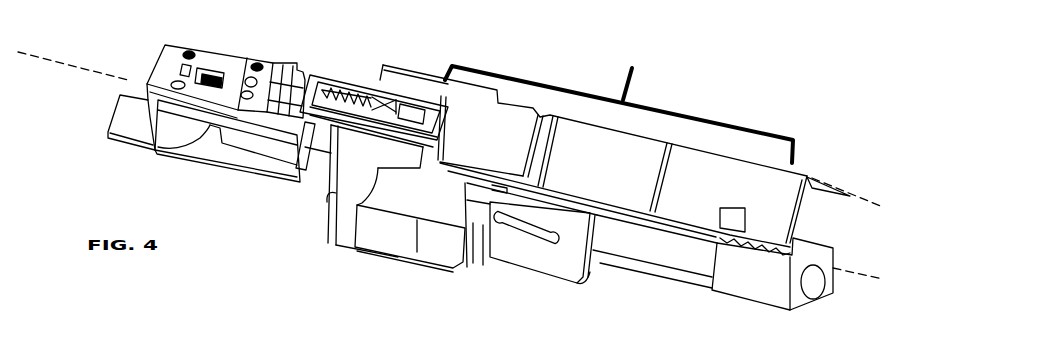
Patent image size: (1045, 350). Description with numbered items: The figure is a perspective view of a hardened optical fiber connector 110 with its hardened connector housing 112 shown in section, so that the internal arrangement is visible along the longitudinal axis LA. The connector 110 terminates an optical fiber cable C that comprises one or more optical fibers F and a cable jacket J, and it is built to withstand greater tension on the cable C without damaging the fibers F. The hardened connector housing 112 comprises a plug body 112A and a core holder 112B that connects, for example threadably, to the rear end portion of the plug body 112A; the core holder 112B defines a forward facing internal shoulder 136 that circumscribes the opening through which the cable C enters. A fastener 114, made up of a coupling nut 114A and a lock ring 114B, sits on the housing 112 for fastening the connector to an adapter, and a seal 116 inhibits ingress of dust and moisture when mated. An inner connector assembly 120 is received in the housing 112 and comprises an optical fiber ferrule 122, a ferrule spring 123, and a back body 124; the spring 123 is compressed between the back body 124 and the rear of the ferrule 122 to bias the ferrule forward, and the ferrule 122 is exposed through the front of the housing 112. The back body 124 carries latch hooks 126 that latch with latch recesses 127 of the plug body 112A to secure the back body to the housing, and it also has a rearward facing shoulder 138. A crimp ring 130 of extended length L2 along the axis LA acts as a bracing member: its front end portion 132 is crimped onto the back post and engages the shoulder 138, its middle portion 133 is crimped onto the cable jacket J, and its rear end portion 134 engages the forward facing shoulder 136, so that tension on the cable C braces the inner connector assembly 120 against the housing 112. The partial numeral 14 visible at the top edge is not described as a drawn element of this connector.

The hardened optical fiber connector 110 is at (838, 97).
The hardened connector housing 112 is at (700, 302).
The plug body 112A is at (642, 260).
The core holder 112B is at (748, 285).
The fastener 114 is at (458, 278).
The coupling nut 114A is at (365, 253).
The lock ring 114B is at (538, 273).
The seal 116 is at (328, 193).
The inner connector assembly 120 is at (283, 57).
The optical fiber ferrule 122 is at (165, 43).
The ferrule spring 123 is at (347, 73).
The back body 124 is at (372, 193).
The latch hooks 126 is at (308, 176).
The latch recesses 127 is at (300, 165).
The crimp ring 130 is at (535, 175).
The front end portion 132 is at (457, 113).
The middle portion 133 is at (595, 153).
The rear end portion 134 is at (790, 190).
The forward facing internal shoulder 136 is at (803, 183).
The rearward facing shoulder 138 is at (438, 149).
The handle 14 is at (487, 5).
The longitudinal axis LA is at (67, 65).
The length of crimp ring L2 is at (619, 105).
The optical fibers F is at (313, 170).
The optical fiber cable C is at (862, 192).
The cable jacket J is at (857, 260).